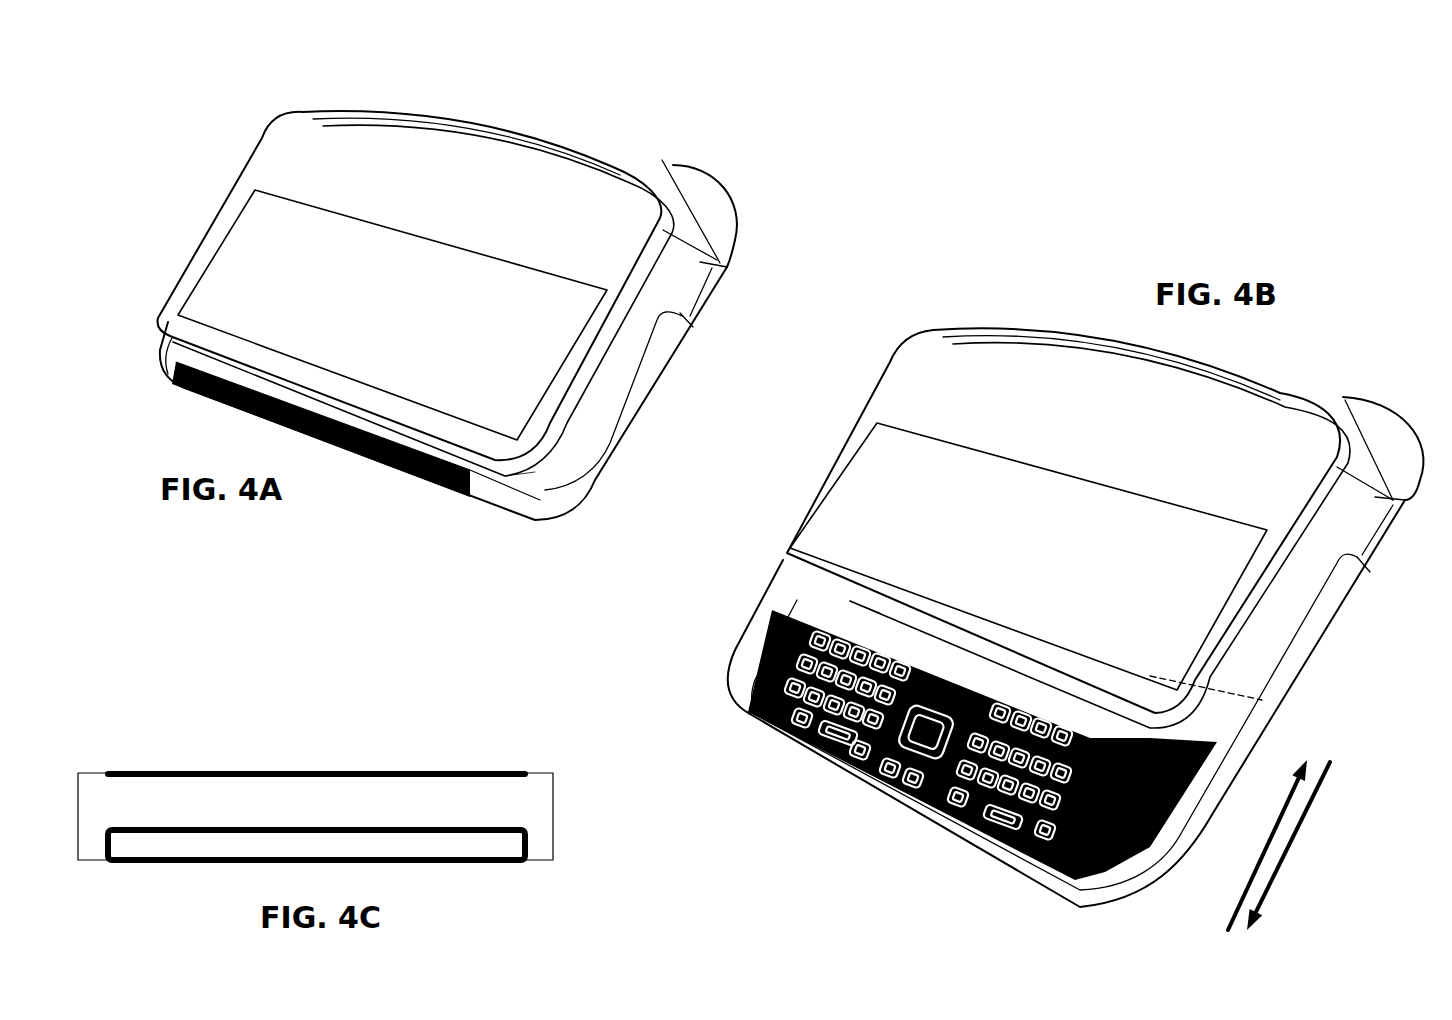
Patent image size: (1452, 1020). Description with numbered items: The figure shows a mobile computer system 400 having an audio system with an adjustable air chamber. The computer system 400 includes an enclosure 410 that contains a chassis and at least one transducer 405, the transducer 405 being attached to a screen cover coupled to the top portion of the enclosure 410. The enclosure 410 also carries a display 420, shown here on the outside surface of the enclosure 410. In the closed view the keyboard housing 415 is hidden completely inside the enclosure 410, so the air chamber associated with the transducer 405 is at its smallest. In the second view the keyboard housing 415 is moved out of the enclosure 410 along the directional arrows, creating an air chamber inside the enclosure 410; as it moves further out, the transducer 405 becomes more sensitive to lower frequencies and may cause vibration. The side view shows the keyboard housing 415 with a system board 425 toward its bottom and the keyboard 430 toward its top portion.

In FIG. 4B, the computer system 400 is at (1048, 225).
In FIG. 4A, the transducer 405 is at (350, 190).
In FIG. 4B, the transducer 405 is at (983, 422).
In FIG. 4A, the enclosure 410 is at (505, 230).
In FIG. 4B, the enclosure 410 is at (1155, 468).
In FIG. 4B, the keyboard housing 415 is at (814, 745).
In FIG. 4C, the keyboard housing 415 is at (570, 802).
In FIG. 4A, the display 420 is at (534, 393).
In FIG. 4B, the display 420 is at (866, 543).
In FIG. 4C, the system board 425 is at (476, 877).
In FIG. 4B, the keyboard 430 is at (412, 677).
In FIG. 4C, the keyboard 430 is at (365, 759).